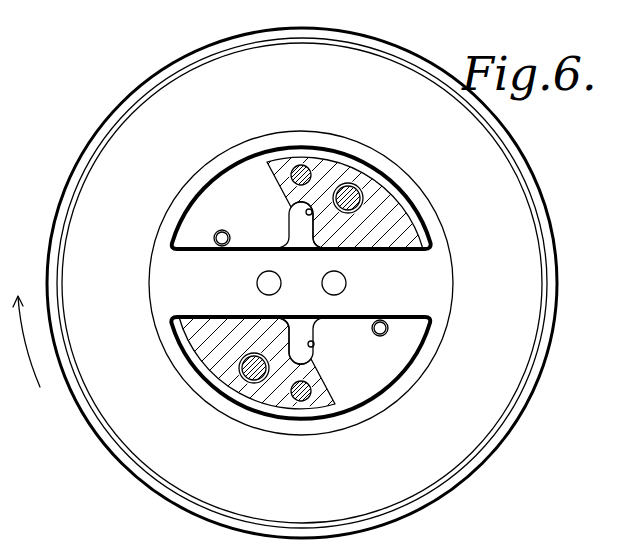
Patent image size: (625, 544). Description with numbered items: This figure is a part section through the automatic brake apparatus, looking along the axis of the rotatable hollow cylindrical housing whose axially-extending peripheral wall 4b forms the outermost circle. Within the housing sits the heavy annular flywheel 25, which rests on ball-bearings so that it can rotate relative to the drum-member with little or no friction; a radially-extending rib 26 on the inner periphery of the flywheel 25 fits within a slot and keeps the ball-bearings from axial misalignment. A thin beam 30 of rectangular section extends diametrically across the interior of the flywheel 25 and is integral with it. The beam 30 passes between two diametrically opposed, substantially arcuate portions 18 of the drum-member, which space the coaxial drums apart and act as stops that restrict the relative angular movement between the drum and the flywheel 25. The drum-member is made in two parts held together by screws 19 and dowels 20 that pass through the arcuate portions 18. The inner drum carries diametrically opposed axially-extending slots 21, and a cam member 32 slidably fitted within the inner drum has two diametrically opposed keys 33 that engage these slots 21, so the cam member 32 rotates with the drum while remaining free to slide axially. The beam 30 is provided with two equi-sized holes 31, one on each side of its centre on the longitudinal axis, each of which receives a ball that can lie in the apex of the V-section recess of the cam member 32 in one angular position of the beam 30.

The axially-extending peripheral wall 4b is at (159, 79).
The annular flywheel 25 is at (97, 185).
The radially-extending rib 26 is at (249, 154).
The beam 30 is at (174, 273).
The arcuate portions 18 is at (400, 222).
The screws 19 is at (363, 187).
The dowels 20 is at (305, 170).
The axially-extending slots 21 is at (311, 209).
The keys 33 is at (296, 231).
The cam member 32 is at (322, 322).
The holes 31 is at (326, 274).